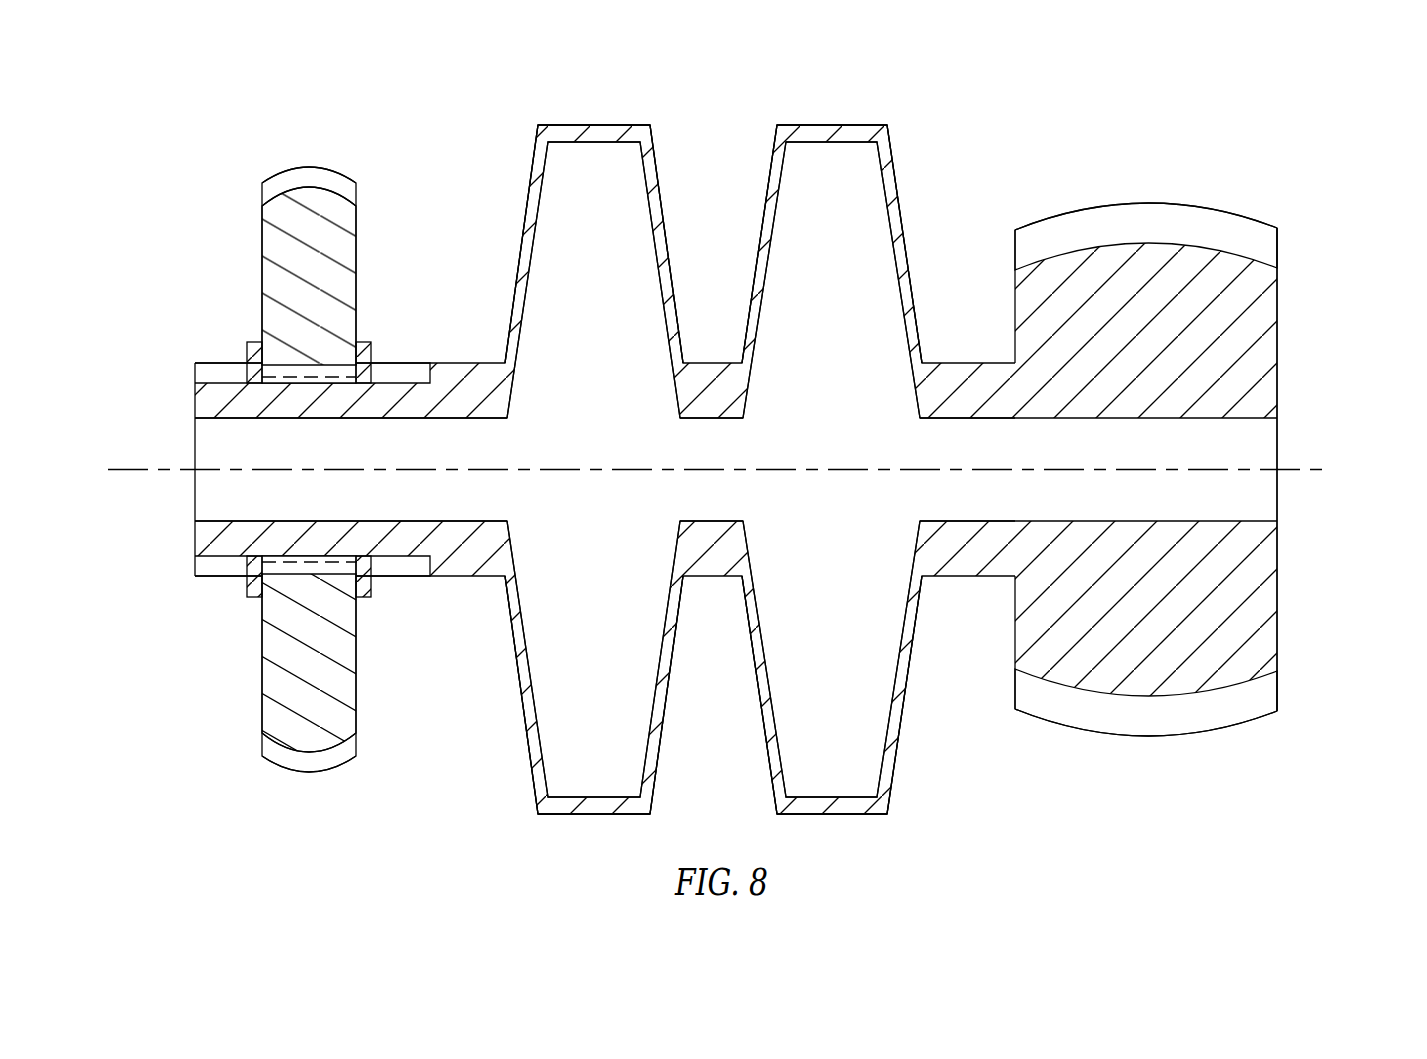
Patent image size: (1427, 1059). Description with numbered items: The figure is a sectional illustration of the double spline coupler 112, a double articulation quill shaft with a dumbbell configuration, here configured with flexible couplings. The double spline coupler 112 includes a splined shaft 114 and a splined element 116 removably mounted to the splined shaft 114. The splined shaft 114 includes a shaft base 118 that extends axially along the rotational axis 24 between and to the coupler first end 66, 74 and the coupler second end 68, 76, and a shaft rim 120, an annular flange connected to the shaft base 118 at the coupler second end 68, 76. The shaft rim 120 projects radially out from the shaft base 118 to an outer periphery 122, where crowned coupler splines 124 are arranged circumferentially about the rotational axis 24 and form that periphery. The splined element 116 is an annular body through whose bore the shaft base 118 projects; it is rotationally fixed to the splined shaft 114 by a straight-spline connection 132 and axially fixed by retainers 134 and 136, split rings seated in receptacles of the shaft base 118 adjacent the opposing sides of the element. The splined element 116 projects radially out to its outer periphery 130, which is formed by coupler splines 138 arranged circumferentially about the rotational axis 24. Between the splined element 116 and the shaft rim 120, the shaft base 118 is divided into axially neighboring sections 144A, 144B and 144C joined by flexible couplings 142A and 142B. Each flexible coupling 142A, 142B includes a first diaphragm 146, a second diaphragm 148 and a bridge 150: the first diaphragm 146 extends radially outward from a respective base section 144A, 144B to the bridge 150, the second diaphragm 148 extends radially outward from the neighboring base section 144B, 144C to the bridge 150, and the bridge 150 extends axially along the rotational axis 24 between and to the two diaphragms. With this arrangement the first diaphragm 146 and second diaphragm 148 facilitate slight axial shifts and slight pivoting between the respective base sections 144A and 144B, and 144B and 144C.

The double spline coupler 112 is at (201, 113).
The splined shaft 114 is at (1267, 195).
The splined element 116 is at (361, 164).
The shaft base 118 is at (450, 592).
The shaft rim 120 is at (1277, 312).
The outer periphery 122 is at (1137, 203).
The coupler splines 124 is at (1277, 250).
The outer periphery 130 is at (312, 167).
The spline connection 132 is at (305, 388).
The retainer 134 is at (248, 343).
The retainer 136 is at (372, 343).
The coupler splines 138 is at (262, 195).
The flexible coupling 142A is at (653, 117).
The flexible coupling 142B is at (896, 117).
The base section 144A is at (402, 418).
The base section 144B is at (702, 418).
The base section 144C is at (945, 418).
The first diaphragm 146 is at (525, 293).
The second diaphragm 148 is at (658, 310).
The bridge 150 is at (600, 143).
The coupler first end 66 is at (122, 469).
The coupler first end 74 is at (195, 398).
The coupler second end 68 is at (1347, 469).
The coupler second end 76 is at (1277, 357).
The rotational axis 24 is at (1345, 474).